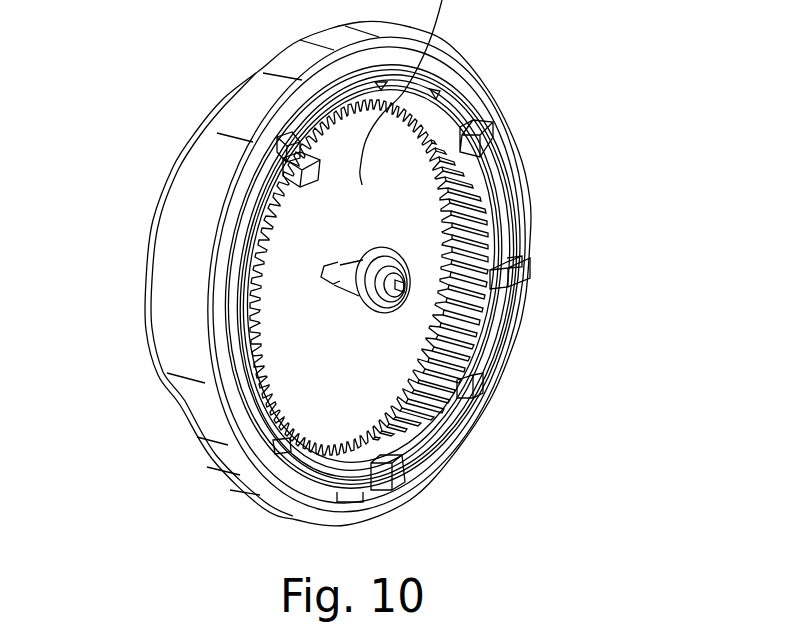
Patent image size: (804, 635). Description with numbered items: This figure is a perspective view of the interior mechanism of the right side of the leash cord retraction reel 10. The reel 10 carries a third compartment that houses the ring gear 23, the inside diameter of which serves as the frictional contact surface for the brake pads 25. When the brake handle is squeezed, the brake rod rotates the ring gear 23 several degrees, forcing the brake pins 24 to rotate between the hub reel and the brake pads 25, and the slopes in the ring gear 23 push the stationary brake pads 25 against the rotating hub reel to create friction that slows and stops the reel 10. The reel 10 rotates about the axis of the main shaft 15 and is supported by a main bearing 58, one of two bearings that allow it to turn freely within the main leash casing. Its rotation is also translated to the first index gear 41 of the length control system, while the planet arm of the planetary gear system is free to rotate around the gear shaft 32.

The leash cord retraction reel 10 is at (210, 168).
The brake pads 25 is at (227, 250).
The ring gear 23 is at (493, 225).
The brake pins 24 is at (520, 282).
The main shaft 15 is at (473, 318).
The first index gear 41 is at (403, 300).
The main bearing 58 is at (410, 283).
The gear shaft 32 is at (347, 277).